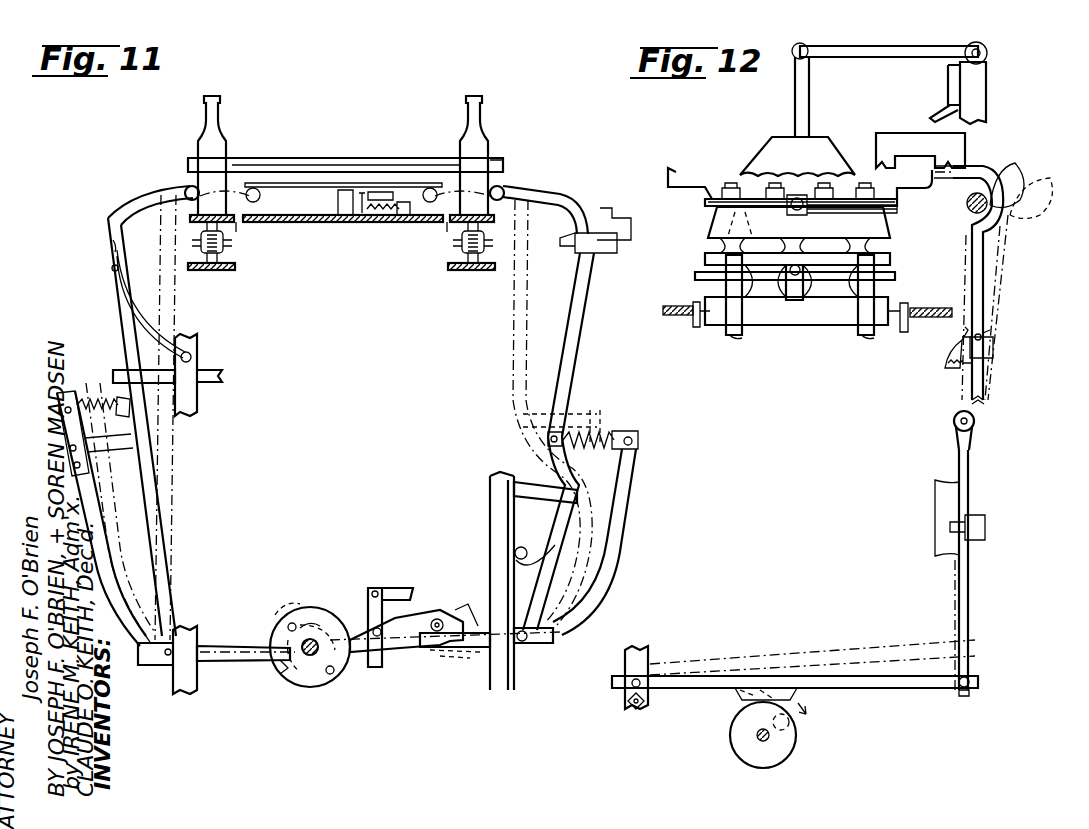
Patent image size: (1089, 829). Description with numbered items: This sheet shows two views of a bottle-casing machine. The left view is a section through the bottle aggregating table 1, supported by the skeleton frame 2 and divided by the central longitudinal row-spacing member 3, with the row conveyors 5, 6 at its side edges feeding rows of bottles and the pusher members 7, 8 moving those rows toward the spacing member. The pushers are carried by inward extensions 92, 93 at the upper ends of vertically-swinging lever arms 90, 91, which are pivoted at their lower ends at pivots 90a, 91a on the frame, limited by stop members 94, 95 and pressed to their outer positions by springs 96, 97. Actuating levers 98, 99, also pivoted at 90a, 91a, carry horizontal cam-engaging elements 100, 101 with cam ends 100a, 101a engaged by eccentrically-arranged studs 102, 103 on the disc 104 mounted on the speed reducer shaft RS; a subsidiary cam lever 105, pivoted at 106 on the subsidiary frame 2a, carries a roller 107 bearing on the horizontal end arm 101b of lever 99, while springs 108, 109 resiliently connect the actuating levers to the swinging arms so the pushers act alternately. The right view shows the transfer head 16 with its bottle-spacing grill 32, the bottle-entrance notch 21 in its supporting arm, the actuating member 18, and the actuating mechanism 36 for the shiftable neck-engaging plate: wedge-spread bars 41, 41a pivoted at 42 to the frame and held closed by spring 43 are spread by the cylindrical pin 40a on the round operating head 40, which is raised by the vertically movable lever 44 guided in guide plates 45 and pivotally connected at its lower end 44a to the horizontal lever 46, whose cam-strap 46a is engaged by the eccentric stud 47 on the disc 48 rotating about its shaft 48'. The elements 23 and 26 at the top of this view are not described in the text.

In FIG. 11, the bottle aggregating table 1 is at (304, 224).
In FIG. 11, the skeleton frame 2 is at (190, 398).
In FIG. 12, the skeleton frame 2 is at (646, 670).
In FIG. 11, the subsidiary frame 2a is at (392, 612).
In FIG. 12, the subsidiary frame 2a is at (986, 86).
In FIG. 11, the longitudinal row-spacing member 3 is at (337, 200).
In FIG. 11, the row conveyor 5 is at (234, 268).
In FIG. 12, the row conveyor 5 is at (674, 306).
In FIG. 11, the row conveyor 6 is at (474, 272).
In FIG. 12, the row conveyor 6 is at (922, 308).
In FIG. 11, the pusher member 7 is at (188, 187).
In FIG. 11, the pusher member 8 is at (503, 188).
In FIG. 12, the transfer head 16 is at (822, 140).
In FIG. 12, the actuating member 18 is at (670, 176).
In FIG. 12, the bottle-entrance notch 21 is at (917, 136).
In FIG. 12, the lifting arm 23 is at (806, 50).
In FIG. 12, the pulley 26 is at (990, 56).
In FIG. 12, the rectangular grill 32 is at (887, 232).
In FIG. 12, the actuating mechanism 36 is at (995, 335).
In FIG. 12, the operating head 40 is at (955, 430).
In FIG. 12, the cylindrical pin 40a is at (976, 428).
In FIG. 12, the wedge-spread bar 41 is at (975, 228).
In FIG. 12, the wedge-spread bar 41a is at (984, 384).
In FIG. 12, the pivot 42 is at (996, 348).
In FIG. 12, the spring 43 is at (955, 374).
In FIG. 12, the vertically movable lever 44 is at (972, 612).
In FIG. 12, the lower end of lever 44a is at (972, 686).
In FIG. 12, the guide plates 45 is at (987, 530).
In FIG. 12, the horizontal lever 46 is at (866, 688).
In FIG. 12, the cam-strap 46a is at (740, 704).
In FIG. 12, the eccentric stud 47 is at (792, 724).
In FIG. 12, the disc 48 is at (751, 744).
In FIG. 12, the shaft 48' is at (803, 750).
In FIG. 11, the vertically-swinging lever arm 90 is at (124, 318).
In FIG. 11, the pivot 90a is at (166, 658).
In FIG. 11, the vertically-swinging lever arm 91 is at (582, 338).
In FIG. 11, the pivot 91a is at (522, 644).
In FIG. 11, the inward extension 92 is at (140, 205).
In FIG. 11, the inward extension 93 is at (551, 208).
In FIG. 11, the stop member 94 is at (113, 375).
In FIG. 11, the stop member 95 is at (578, 496).
In FIG. 11, the spring 96 is at (150, 328).
In FIG. 11, the spring 97 is at (532, 554).
In FIG. 11, the actuating lever 98 is at (70, 490).
In FIG. 11, the actuating lever 99 is at (628, 530).
In FIG. 11, the cam-engaging element 100 is at (237, 662).
In FIG. 11, the cam end 100a is at (278, 680).
In FIG. 11, the cam-engaging element 101 is at (470, 652).
In FIG. 11, the cam end 101a is at (322, 622).
In FIG. 11, the horizontal end arm 101b is at (470, 604).
In FIG. 11, the studs 102 is at (310, 614).
In FIG. 11, the studs 103 is at (334, 680).
In FIG. 11, the disc 104 is at (302, 690).
In FIG. 11, the subsidiary cam lever 105 is at (415, 618).
In FIG. 11, the pivot 106 is at (374, 628).
In FIG. 11, the roller 107 is at (440, 617).
In FIG. 11, the spring 108 is at (72, 414).
In FIG. 11, the spring 109 is at (602, 436).
In FIG. 11, the speed reducer shaft RS is at (316, 660).